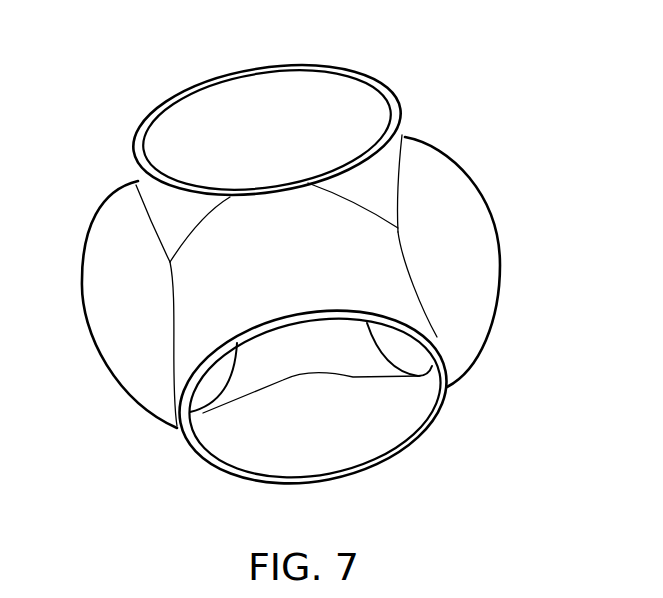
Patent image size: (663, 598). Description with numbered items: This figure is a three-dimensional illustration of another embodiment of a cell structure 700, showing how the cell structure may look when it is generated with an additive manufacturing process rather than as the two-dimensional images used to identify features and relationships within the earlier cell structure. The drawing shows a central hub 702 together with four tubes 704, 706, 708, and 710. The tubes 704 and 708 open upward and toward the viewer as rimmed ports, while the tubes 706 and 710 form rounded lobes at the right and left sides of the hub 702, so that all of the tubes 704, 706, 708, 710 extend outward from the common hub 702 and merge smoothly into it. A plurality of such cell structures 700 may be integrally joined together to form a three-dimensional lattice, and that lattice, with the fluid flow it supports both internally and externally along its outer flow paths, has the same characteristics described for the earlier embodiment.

The cell structure 700 is at (514, 102).
The hub 702 is at (403, 135).
The tube 704 is at (382, 79).
The tube 706 is at (500, 287).
The tube 708 is at (438, 415).
The tube 710 is at (110, 378).